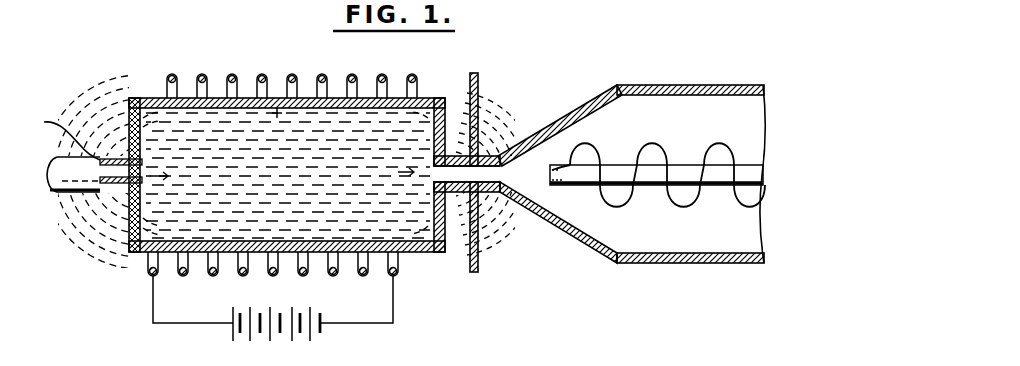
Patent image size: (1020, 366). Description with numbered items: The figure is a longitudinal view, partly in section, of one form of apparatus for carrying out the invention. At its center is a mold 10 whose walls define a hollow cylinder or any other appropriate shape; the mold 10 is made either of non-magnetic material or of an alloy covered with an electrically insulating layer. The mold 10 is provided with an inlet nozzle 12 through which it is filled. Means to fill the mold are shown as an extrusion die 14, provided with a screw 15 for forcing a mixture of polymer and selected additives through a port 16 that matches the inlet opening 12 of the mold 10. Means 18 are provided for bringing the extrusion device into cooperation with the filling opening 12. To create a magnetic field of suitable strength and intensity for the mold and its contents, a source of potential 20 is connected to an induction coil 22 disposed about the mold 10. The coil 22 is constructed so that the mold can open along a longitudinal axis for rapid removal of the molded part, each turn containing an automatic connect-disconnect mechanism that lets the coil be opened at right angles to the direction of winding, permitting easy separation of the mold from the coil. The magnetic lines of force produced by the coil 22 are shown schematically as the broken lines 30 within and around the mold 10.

The mold 10 is at (150, 97).
The magnetic lines of force 30 is at (272, 98).
The induction coil 22 is at (394, 272).
The source of potential 20 is at (396, 321).
The means for bringing the extrusion device into cooperation with the filling openin 18 is at (477, 75).
The port 16 is at (496, 160).
The inlet nozzle 12 is at (476, 205).
The extrusion die 14 is at (588, 242).
The screw 15 is at (684, 203).